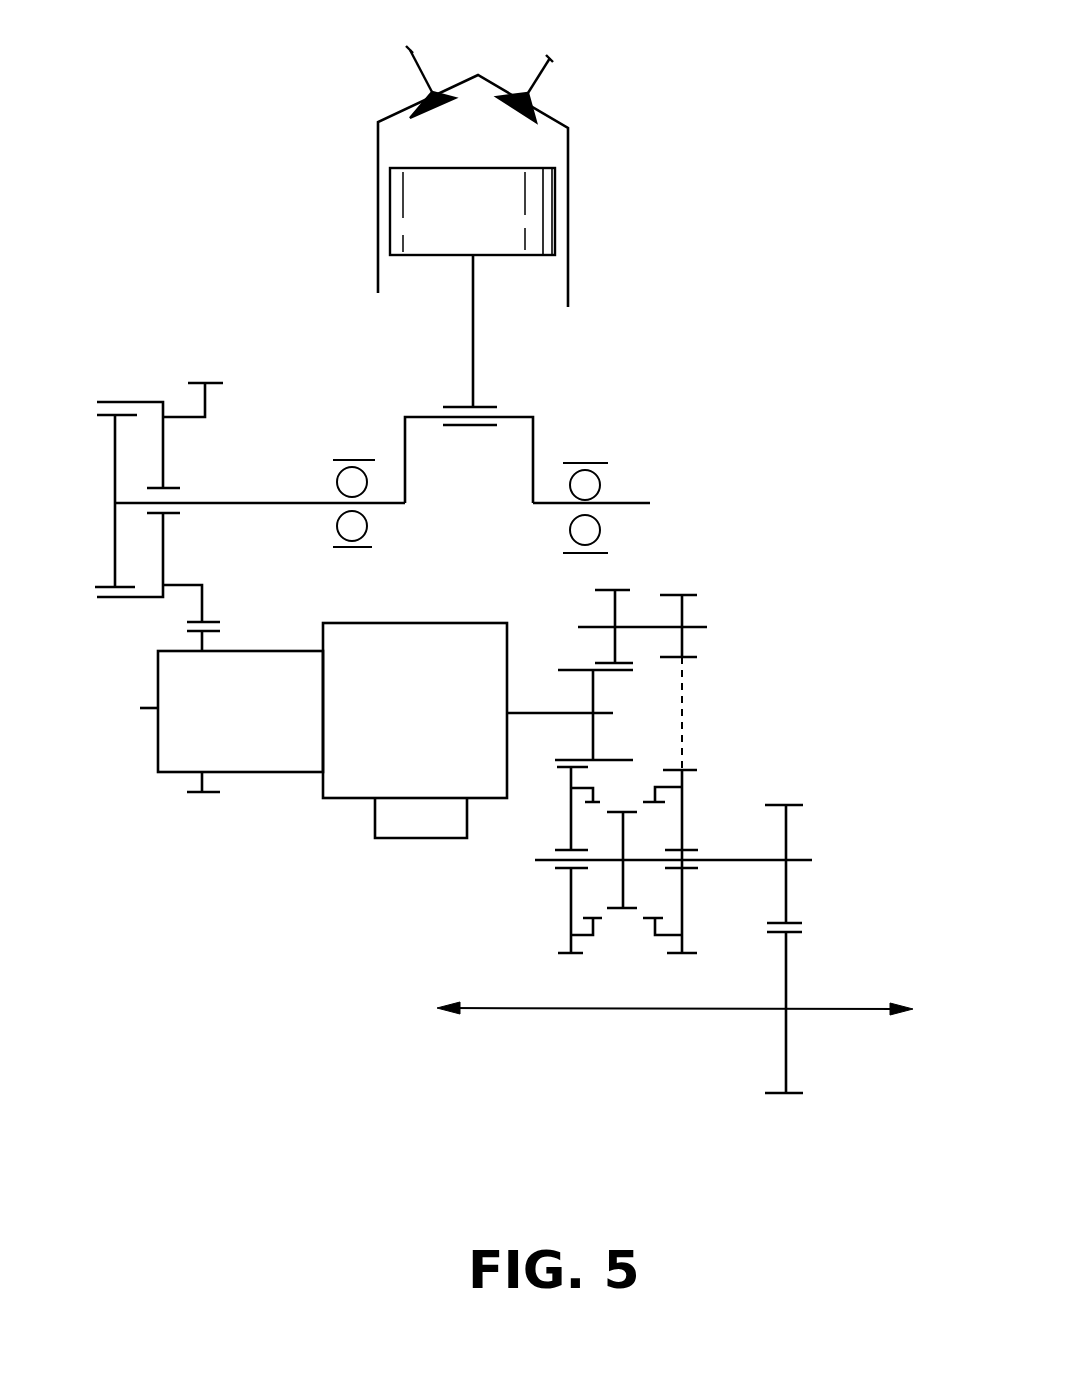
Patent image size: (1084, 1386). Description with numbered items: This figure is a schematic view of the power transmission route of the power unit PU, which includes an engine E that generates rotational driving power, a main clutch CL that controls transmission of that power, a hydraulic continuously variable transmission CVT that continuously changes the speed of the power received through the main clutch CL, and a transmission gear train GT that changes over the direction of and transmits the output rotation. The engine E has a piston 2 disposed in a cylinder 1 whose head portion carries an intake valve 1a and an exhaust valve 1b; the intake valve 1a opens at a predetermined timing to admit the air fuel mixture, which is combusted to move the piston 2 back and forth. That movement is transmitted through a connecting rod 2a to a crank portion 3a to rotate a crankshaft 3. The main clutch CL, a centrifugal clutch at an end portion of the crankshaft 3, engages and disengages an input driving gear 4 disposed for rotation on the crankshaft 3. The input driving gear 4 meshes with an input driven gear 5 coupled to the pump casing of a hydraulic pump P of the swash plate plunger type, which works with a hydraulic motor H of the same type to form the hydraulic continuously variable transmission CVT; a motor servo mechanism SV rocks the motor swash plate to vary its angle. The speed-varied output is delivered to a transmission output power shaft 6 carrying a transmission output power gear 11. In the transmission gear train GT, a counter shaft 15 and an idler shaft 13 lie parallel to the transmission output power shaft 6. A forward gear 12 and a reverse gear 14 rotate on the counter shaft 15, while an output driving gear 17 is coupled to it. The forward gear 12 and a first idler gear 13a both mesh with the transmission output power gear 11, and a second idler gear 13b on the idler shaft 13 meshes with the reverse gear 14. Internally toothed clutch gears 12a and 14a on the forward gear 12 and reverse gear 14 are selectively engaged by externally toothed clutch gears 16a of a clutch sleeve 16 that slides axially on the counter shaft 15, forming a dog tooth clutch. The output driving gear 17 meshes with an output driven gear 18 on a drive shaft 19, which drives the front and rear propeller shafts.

The cylinder 1 is at (568, 272).
The intake valve 1a is at (540, 72).
The exhaust valve 1b is at (410, 50).
The piston 2 is at (463, 228).
The connecting rod 2a is at (473, 328).
The crankshaft 3 is at (268, 503).
The crank portion 3a is at (512, 412).
The input driving gear 4 is at (223, 383).
The input driven gear 5 is at (212, 797).
The transmission output power shaft 6 is at (538, 713).
The transmission output power gear 11 is at (568, 670).
The forward gear 12 is at (562, 952).
The internally toothed clutch gear 12a is at (583, 920).
The idler shaft 13 is at (700, 623).
The first idler gear 13a is at (618, 590).
The second idler gear 13b is at (692, 595).
The reverse gear 14 is at (688, 957).
The internally toothed clutch gear 14a is at (660, 920).
The counter shaft 15 is at (727, 860).
The clutch sleeve 16 is at (622, 830).
The externally toothed clutch gears 16a is at (625, 912).
The output driving gear 17 is at (810, 776).
The output driven gear 18 is at (777, 1097).
The drive shaft 19 is at (715, 1012).
The engine E is at (596, 209).
The power unit PU is at (761, 251).
The main clutch CL is at (87, 444).
The hydraulic continuously variable transmission CVT is at (284, 866).
The hydraulic pump P is at (230, 723).
The hydraulic motor H is at (408, 723).
The motor servo mechanism SV is at (408, 827).
The transmission gear train GT is at (718, 762).